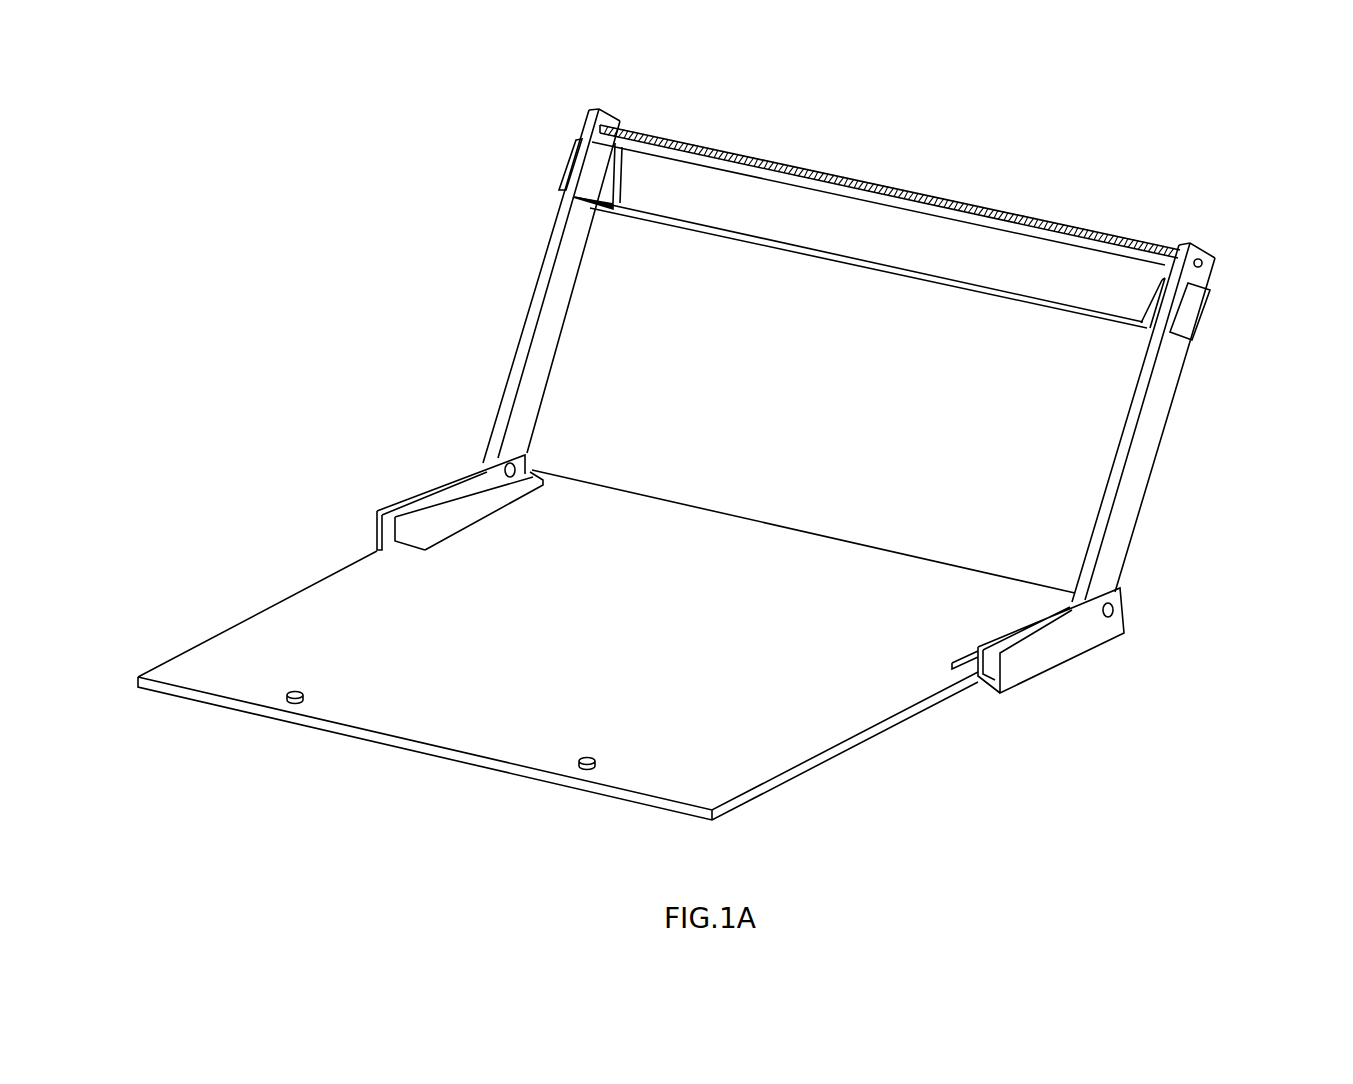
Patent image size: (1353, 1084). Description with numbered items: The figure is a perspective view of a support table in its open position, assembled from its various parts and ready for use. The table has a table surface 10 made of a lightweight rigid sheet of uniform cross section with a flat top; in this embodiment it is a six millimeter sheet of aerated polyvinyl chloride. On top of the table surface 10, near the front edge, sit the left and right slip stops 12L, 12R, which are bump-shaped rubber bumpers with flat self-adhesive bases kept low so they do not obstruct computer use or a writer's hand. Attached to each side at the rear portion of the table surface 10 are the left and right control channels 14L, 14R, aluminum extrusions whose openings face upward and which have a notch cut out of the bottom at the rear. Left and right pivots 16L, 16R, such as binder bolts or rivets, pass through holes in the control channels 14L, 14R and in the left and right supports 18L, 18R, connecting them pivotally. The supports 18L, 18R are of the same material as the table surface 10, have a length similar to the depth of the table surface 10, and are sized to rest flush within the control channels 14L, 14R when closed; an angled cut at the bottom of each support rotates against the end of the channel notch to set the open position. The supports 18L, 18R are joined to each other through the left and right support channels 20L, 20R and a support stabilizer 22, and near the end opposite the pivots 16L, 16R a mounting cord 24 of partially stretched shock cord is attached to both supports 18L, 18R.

The table surface 10 is at (757, 757).
The left slip stop 12L is at (294, 703).
The right slip stop 12R is at (584, 769).
The left control channel 14L is at (420, 491).
The right control channel 14R is at (1087, 649).
The left pivot 16L is at (520, 453).
The right pivot 16R is at (1124, 589).
The left support 18L is at (541, 307).
The right support 18R is at (1157, 432).
The left support channel 20L is at (568, 152).
The right support channel 20R is at (1208, 292).
The support stabilizer 22 is at (838, 236).
The mounting cord 24 is at (866, 176).